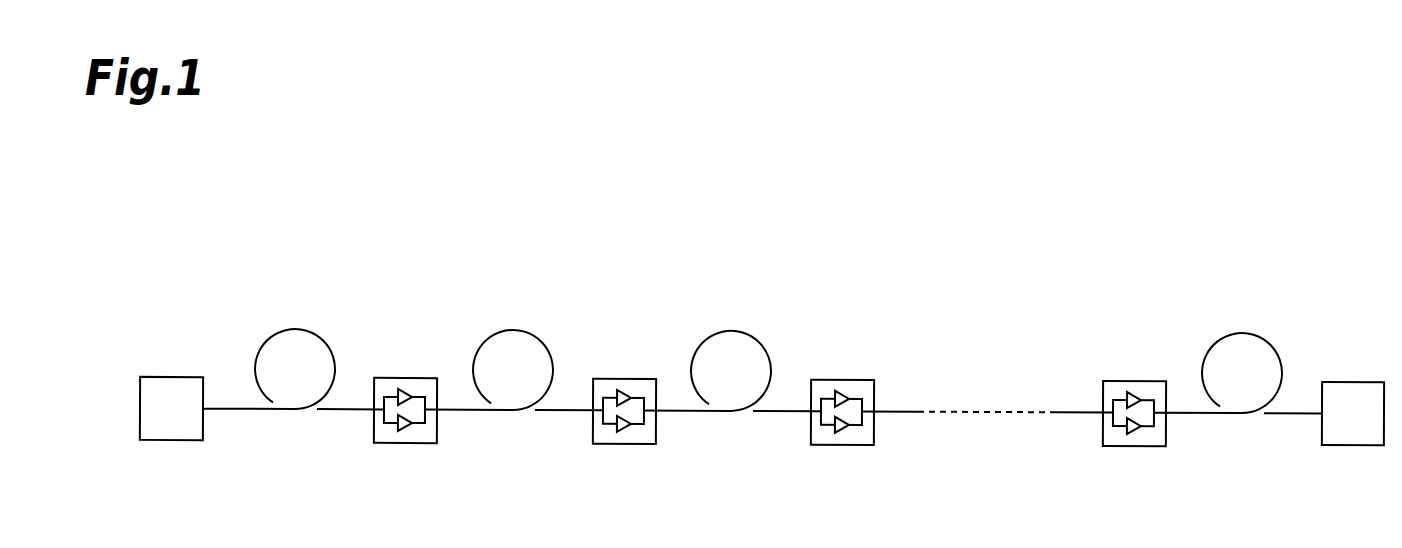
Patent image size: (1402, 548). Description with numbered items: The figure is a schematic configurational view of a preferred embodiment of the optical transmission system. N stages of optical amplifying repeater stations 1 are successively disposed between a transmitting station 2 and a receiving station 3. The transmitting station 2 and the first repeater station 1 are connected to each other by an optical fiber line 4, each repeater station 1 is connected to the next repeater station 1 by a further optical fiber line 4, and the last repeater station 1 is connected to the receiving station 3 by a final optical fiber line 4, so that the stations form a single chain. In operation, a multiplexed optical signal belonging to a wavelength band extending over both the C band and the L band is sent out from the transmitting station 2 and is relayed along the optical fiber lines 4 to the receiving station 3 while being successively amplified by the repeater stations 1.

The optical amplifying repeater station 1 is at (1134, 334).
The transmitting station 2 is at (170, 377).
The receiving station 3 is at (1350, 377).
The optical fiber line 4 is at (296, 330).